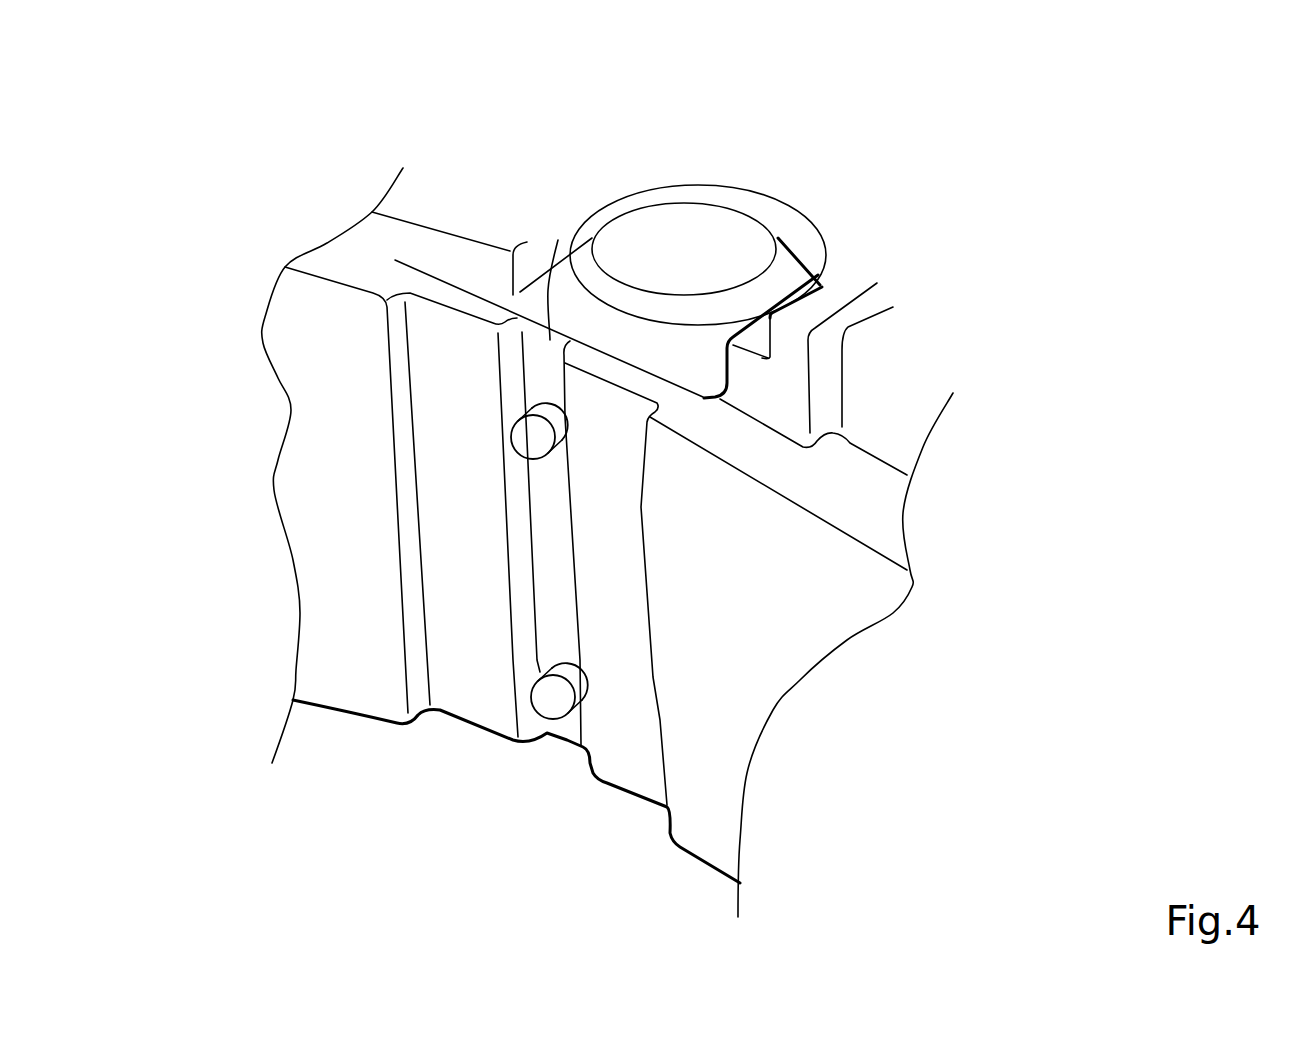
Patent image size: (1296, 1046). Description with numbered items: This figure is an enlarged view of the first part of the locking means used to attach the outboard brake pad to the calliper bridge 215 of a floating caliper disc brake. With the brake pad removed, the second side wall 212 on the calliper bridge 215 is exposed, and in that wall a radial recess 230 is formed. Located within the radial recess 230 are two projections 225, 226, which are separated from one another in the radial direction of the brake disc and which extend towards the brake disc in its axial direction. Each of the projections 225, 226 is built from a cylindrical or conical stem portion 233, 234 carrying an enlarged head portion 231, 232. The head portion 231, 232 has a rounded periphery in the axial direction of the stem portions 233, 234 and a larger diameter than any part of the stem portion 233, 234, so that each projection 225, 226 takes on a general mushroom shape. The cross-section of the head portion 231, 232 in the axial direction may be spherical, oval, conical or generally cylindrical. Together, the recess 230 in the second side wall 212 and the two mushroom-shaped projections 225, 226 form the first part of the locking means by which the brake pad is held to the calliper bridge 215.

The second side wall 212 is at (323, 433).
The calliper bridge 215 is at (920, 247).
The projection 225 is at (487, 447).
The projection 226 is at (553, 757).
The radial recess 230 is at (527, 242).
The head portion 231 is at (527, 438).
The head portion 232 is at (547, 700).
The stem portion 233 is at (550, 408).
The stem portion 234 is at (580, 670).